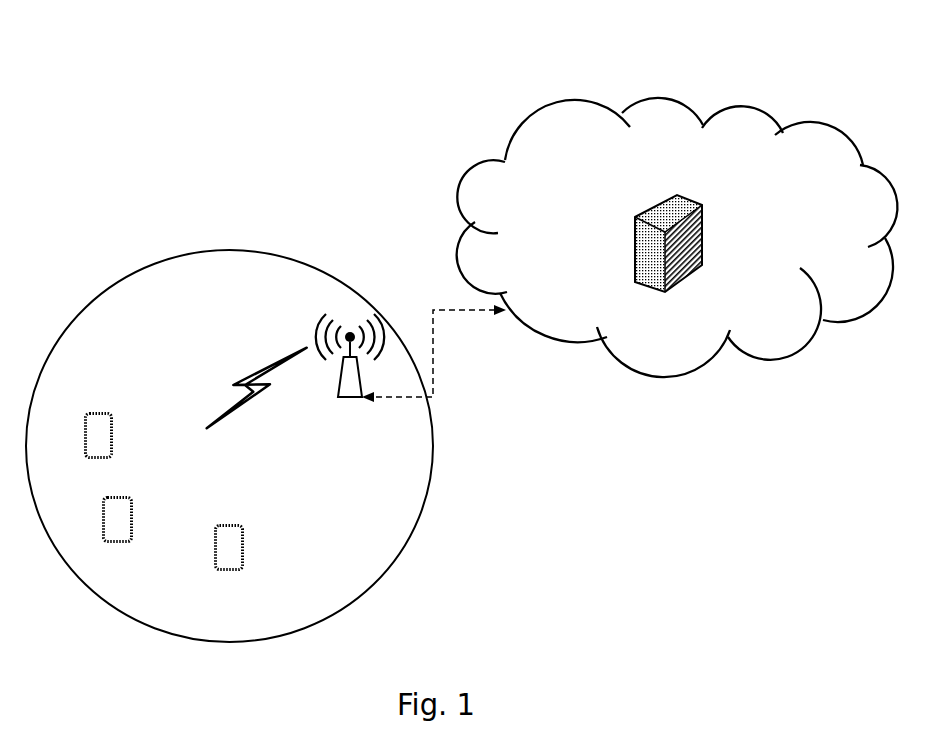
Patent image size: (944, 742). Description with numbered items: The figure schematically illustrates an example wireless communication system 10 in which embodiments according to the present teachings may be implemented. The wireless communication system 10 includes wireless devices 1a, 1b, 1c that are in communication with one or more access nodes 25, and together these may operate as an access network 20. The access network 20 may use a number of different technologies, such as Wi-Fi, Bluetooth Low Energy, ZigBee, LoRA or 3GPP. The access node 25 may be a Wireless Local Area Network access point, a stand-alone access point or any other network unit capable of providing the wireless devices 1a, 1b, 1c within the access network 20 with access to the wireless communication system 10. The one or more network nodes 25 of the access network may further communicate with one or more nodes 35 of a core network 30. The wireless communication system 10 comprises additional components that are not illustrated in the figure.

The wireless communication system 10 is at (287, 90).
The access network 20 is at (145, 334).
The access node 25 is at (303, 330).
The core network 30 is at (577, 156).
The node of core network 35 is at (622, 233).
The wireless device 1a is at (133, 495).
The wireless device 1b is at (108, 412).
The wireless device 1c is at (245, 523).